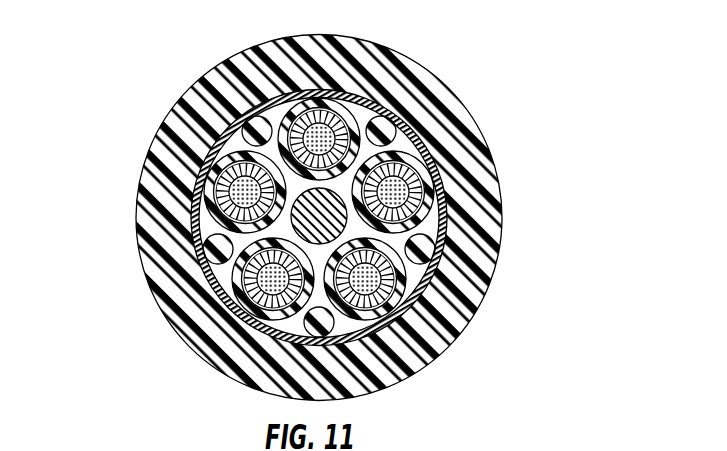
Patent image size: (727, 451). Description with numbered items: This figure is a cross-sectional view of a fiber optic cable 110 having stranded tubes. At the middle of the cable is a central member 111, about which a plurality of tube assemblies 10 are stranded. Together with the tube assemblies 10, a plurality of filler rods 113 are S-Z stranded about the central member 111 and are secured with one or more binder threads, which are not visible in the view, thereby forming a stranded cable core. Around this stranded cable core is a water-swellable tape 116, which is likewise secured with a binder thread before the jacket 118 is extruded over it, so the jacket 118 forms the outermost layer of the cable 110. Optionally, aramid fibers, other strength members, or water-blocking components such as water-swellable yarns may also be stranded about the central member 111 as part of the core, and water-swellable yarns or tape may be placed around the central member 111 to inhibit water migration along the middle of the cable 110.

The fiber optic cable 110 is at (164, 58).
The jacket 118 is at (163, 190).
The filler rods 113 is at (220, 253).
The water-swellable tape 116 is at (400, 306).
The tube assemblies 10 is at (338, 118).
The central member 111 is at (319, 218).